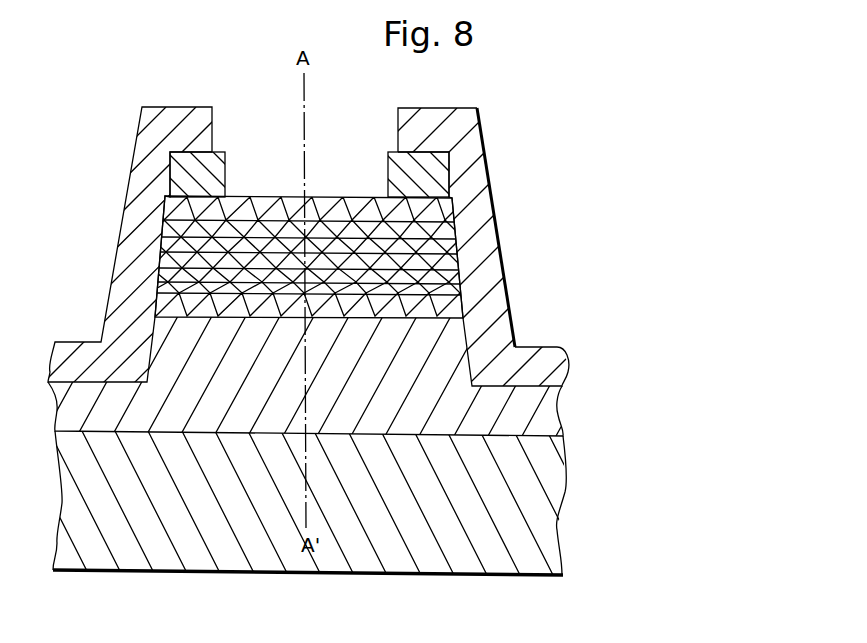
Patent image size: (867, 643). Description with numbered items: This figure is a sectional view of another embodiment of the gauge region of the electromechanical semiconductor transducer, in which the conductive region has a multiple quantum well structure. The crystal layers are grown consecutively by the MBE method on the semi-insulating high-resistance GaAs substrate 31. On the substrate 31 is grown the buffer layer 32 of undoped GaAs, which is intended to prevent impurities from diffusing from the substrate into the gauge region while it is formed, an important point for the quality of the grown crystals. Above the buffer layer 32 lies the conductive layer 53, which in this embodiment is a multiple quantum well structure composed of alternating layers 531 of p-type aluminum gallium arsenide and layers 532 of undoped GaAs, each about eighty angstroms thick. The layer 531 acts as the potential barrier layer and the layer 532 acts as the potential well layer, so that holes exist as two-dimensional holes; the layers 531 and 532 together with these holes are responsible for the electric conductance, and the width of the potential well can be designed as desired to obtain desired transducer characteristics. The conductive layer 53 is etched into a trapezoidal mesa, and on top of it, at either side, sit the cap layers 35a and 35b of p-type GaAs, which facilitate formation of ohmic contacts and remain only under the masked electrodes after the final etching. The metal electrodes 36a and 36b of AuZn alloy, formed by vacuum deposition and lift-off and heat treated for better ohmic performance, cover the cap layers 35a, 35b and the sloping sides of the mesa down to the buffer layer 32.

The substrate 31 is at (560, 532).
The buffer layer 32 is at (563, 425).
The cap layer 35a is at (227, 157).
The cap layer 35b is at (388, 156).
The metal electrode 36a is at (141, 136).
The metal electrode 36b is at (486, 152).
The conductive layer 53 is at (308, 239).
The potential barrier layer 531 is at (163, 206).
The potential well layer 532 is at (161, 230).